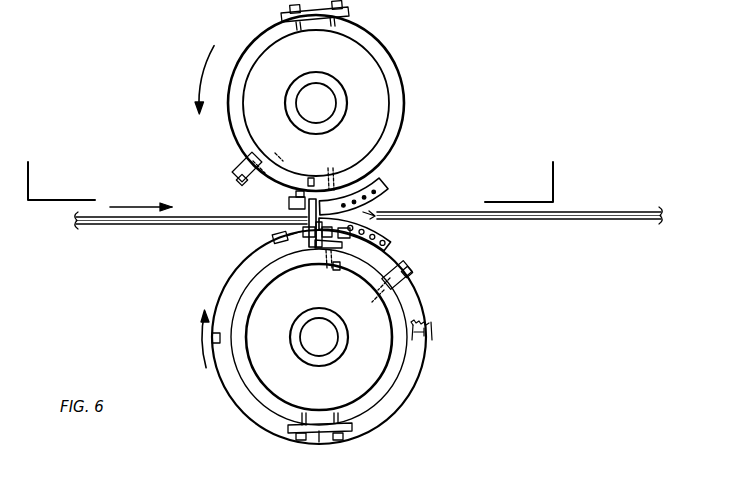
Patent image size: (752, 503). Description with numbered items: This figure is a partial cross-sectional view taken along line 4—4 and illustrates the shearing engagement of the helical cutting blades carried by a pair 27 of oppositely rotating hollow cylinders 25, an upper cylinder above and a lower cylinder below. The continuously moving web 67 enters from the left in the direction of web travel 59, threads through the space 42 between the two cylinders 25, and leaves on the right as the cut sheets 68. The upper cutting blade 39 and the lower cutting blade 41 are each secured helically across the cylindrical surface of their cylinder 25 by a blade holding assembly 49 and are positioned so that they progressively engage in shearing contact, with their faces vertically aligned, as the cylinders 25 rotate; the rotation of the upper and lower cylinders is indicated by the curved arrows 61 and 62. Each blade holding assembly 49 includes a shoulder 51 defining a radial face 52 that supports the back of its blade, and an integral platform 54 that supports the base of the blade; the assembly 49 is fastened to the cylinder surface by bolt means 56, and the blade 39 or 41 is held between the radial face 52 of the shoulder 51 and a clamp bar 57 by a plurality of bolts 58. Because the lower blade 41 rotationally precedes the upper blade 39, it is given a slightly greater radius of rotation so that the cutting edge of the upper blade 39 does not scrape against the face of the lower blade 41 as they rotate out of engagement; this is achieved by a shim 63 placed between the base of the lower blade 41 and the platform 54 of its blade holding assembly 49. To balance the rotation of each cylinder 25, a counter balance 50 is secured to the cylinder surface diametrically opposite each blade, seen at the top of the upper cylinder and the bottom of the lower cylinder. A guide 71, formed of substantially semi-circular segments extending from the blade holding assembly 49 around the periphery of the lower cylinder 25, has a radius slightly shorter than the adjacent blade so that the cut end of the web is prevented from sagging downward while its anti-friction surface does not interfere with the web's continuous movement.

The section line 4— 4 is at (285, 169).
The hollow cylinder 25 is at (399, 58).
The pair of cylinders 27 is at (393, 393).
The upper cutting blade 39 is at (385, 200).
The lower cutting blade 41 is at (392, 237).
The space 42 is at (388, 202).
The blade holding assembly 49 is at (238, 160).
The counter balance 50 is at (324, 438).
The shoulder 51 is at (286, 186).
The radial face 52 is at (336, 186).
The platform 54 is at (372, 183).
The bolt means 56 is at (243, 178).
The clamp bar 57 is at (300, 227).
The bolts 58 is at (289, 202).
The direction of web travel 59 is at (147, 203).
The rotation arrow 61 is at (207, 58).
The rotation arrow 62 is at (206, 366).
The shim 63 is at (288, 232).
The continuously moving web 67 is at (146, 228).
The sheets 68 is at (566, 222).
The guide 71 is at (391, 411).